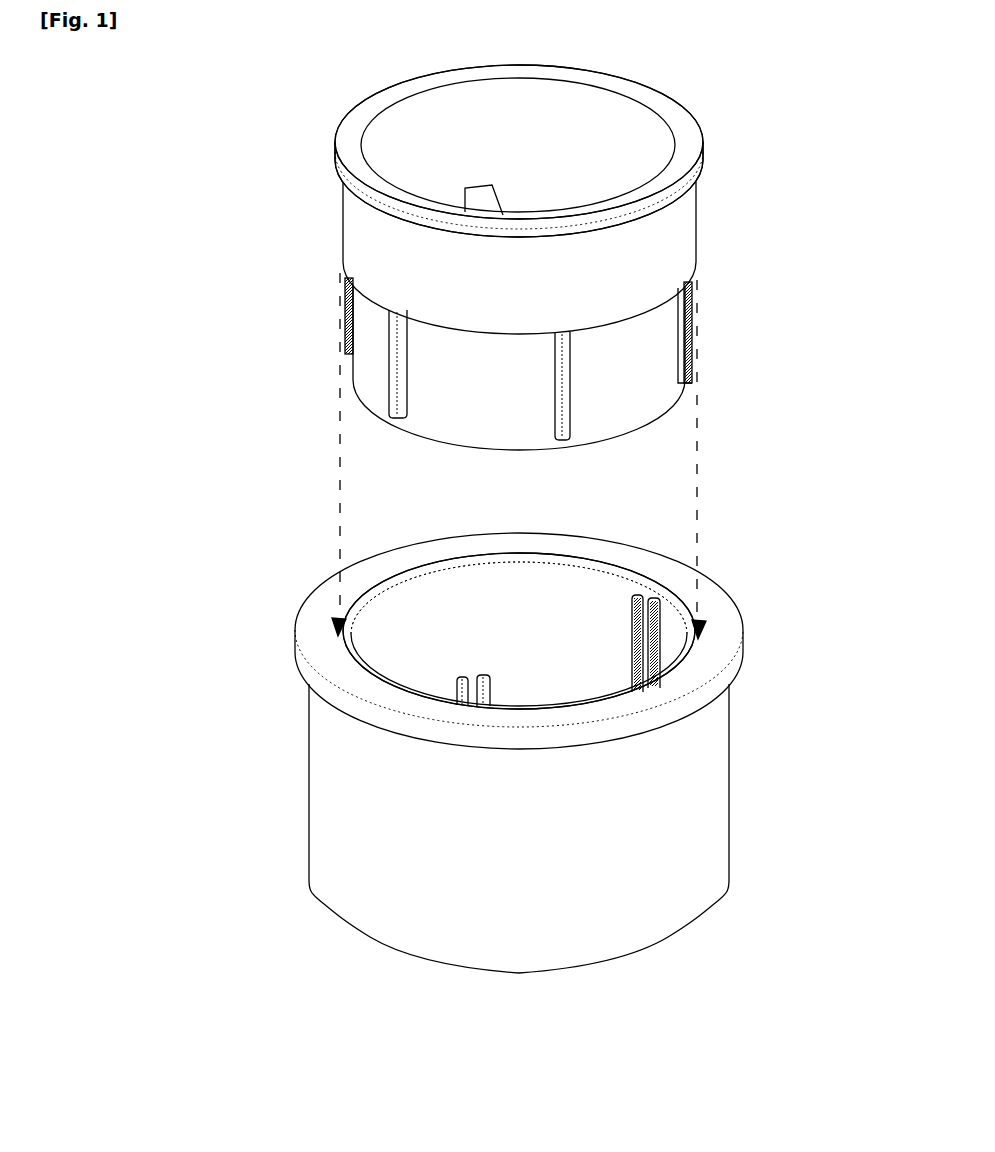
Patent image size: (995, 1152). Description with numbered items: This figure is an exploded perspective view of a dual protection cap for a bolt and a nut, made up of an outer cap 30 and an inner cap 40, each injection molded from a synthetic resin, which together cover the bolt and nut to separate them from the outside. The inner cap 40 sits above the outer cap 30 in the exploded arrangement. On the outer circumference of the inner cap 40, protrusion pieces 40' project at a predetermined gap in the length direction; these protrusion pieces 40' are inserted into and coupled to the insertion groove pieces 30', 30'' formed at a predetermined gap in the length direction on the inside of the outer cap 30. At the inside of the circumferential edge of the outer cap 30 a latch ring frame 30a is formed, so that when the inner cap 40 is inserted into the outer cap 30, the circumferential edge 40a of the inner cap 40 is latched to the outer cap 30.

The outer cap 30 is at (566, 753).
The latch ring frame 30a is at (572, 566).
The insertion groove piece 30' is at (522, 603).
The insertion groove piece 30'' is at (619, 600).
The inner cap 40 is at (562, 257).
The circumferential edge 40a is at (336, 162).
The protrusion piece 40' is at (527, 359).